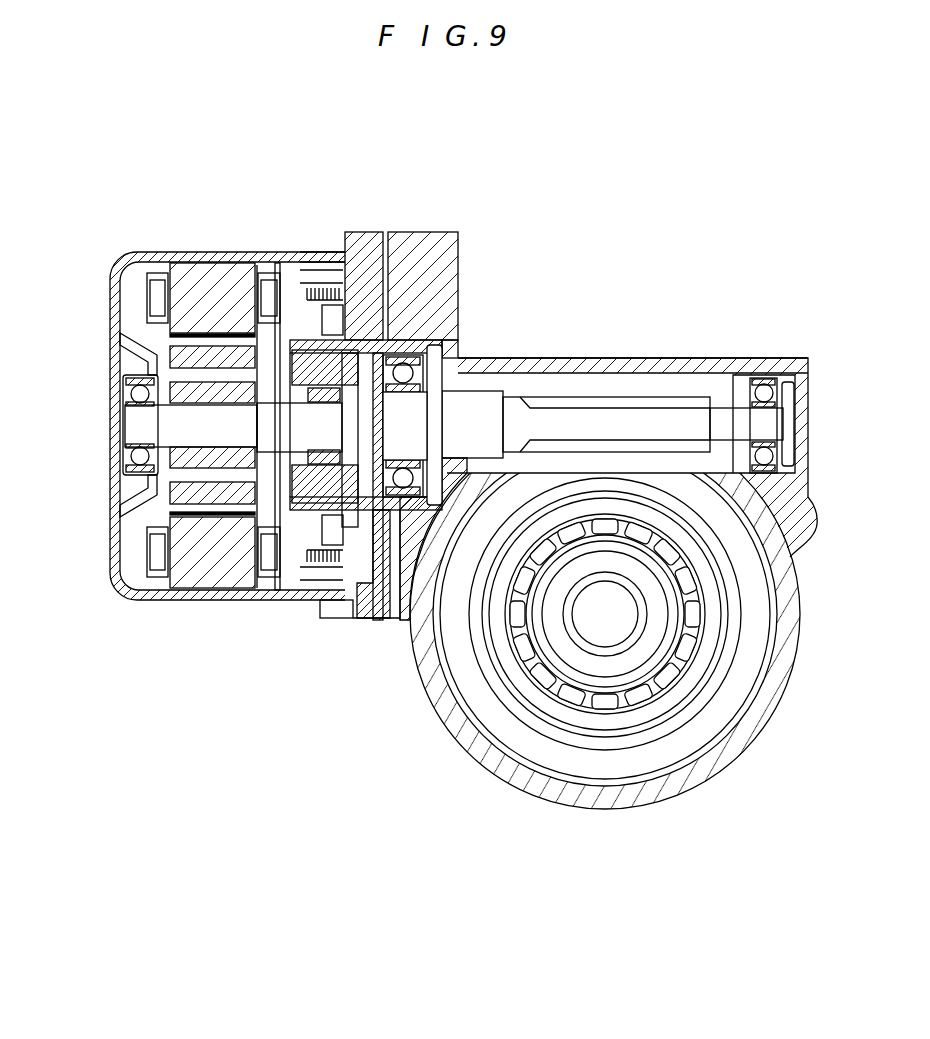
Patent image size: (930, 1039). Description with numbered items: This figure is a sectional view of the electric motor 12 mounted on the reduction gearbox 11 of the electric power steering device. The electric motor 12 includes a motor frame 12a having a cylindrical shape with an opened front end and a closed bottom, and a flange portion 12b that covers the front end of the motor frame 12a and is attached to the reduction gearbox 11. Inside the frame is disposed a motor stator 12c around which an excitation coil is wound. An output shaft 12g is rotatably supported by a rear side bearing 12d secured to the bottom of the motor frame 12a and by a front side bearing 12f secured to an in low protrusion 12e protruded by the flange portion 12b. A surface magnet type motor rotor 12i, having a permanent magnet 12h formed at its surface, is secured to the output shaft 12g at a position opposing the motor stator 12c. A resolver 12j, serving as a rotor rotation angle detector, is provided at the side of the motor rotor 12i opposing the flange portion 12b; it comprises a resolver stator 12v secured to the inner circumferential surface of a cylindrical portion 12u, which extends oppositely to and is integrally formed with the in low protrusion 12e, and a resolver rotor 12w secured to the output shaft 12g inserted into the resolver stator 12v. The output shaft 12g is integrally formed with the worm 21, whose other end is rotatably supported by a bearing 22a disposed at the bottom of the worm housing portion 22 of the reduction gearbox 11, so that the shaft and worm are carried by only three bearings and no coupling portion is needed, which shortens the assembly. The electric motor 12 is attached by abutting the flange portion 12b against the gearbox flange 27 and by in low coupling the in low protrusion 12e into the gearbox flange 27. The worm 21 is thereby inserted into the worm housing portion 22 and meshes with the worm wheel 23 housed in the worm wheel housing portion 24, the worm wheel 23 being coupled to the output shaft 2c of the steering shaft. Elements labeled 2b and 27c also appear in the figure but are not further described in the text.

The reduction gearbox 11 is at (770, 768).
The electric motor 12 is at (107, 234).
The motor frame 12a is at (186, 264).
The flange portion 12b is at (356, 233).
The motor stator 12c is at (226, 286).
The rear side bearing 12d is at (128, 378).
The in low protrusion 12e is at (418, 350).
The front side bearing 12f is at (400, 353).
The output shaft 12g is at (136, 430).
The permanent magnet 12h is at (192, 505).
The motor rotor 12i is at (226, 503).
The resolver 12j is at (357, 680).
The cylindrical portion 12u is at (323, 508).
The resolver stator 12v is at (312, 484).
The resolver rotor 12w is at (297, 456).
The worm 21 is at (635, 400).
The worm housing portion 22 is at (570, 365).
The bearing 22a is at (766, 380).
The worm wheel 23 is at (495, 728).
The worm wheel housing portion 24 is at (532, 776).
The gearbox flange 27 is at (388, 238).
The bracket portion 27c is at (407, 545).
The bearing 2b is at (606, 632).
The output shaft 2c is at (599, 665).